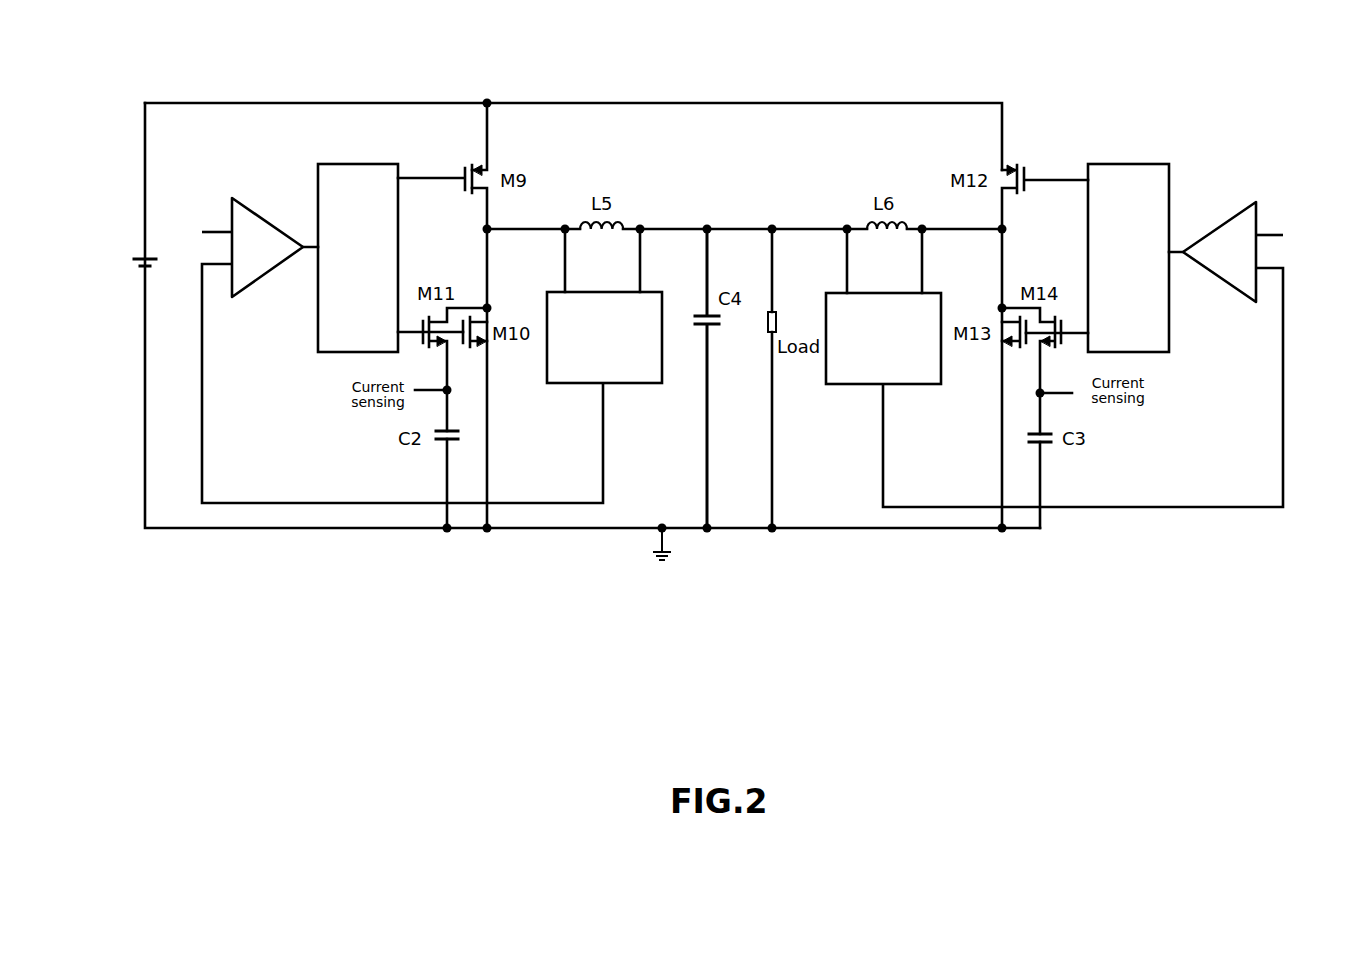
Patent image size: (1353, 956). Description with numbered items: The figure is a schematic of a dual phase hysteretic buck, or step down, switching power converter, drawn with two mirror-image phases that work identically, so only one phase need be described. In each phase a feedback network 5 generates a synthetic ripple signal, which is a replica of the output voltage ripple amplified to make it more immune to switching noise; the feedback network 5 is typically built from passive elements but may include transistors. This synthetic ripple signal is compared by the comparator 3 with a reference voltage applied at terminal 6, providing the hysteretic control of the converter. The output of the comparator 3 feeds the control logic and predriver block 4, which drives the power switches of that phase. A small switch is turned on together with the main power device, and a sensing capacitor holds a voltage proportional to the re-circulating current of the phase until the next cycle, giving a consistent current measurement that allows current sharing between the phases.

The comparator 3 is at (276, 270).
The control logic and predriver 4 is at (385, 164).
The feedback network 5 is at (583, 384).
The terminal 6 is at (209, 233).